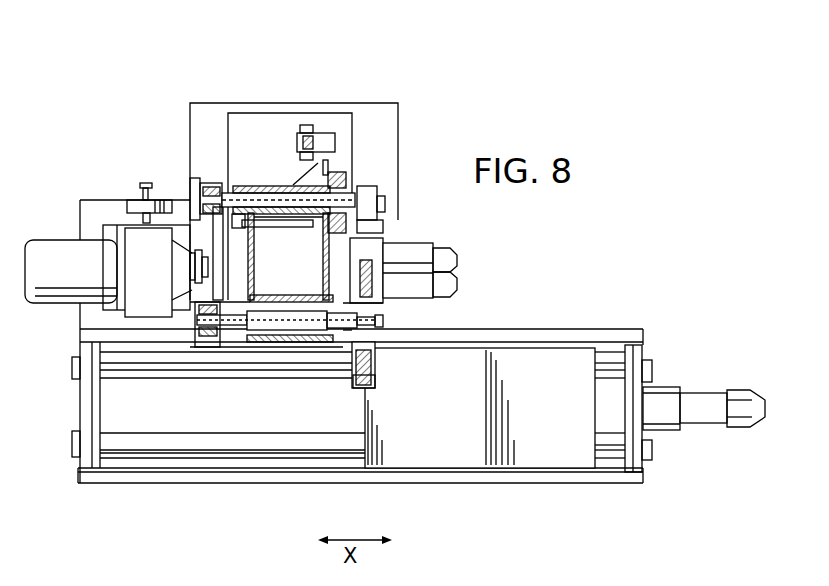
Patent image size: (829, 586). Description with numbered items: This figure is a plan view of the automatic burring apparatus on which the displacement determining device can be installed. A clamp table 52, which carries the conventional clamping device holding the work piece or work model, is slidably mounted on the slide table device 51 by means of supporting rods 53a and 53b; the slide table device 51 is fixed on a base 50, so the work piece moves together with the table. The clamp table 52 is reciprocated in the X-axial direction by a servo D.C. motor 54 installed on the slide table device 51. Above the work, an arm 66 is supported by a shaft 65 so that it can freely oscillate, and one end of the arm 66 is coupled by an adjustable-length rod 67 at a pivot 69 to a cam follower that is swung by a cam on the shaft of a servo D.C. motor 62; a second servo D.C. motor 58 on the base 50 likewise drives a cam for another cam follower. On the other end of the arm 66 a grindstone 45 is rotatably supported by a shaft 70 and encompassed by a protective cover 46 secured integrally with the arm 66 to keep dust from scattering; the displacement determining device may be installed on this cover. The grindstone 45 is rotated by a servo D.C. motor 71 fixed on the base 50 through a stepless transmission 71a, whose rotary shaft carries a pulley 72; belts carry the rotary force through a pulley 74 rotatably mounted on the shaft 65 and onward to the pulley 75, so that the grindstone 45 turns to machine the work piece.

The grindstone 45 is at (382, 366).
The protective cover 46 is at (380, 378).
The base 50 is at (74, 327).
The slide table device 51 is at (356, 488).
The clamp table 52 is at (518, 464).
The supporting rod 53a is at (245, 453).
The supporting rod 53b is at (215, 374).
The servo D.C. motor 54 is at (705, 424).
The servo D.C. motor 58 is at (416, 291).
The servo D.C. motor 62 is at (423, 250).
The shaft 65 is at (277, 190).
The arm 66 is at (340, 274).
The rod 67 is at (307, 128).
The pivot 69 is at (327, 140).
The shaft 70 is at (294, 330).
The servo D.C. motor 71 is at (58, 250).
The stepless transmission 71a is at (135, 237).
The pulley 72 is at (200, 252).
The pulley 74 is at (213, 188).
The pulley 75 is at (211, 323).